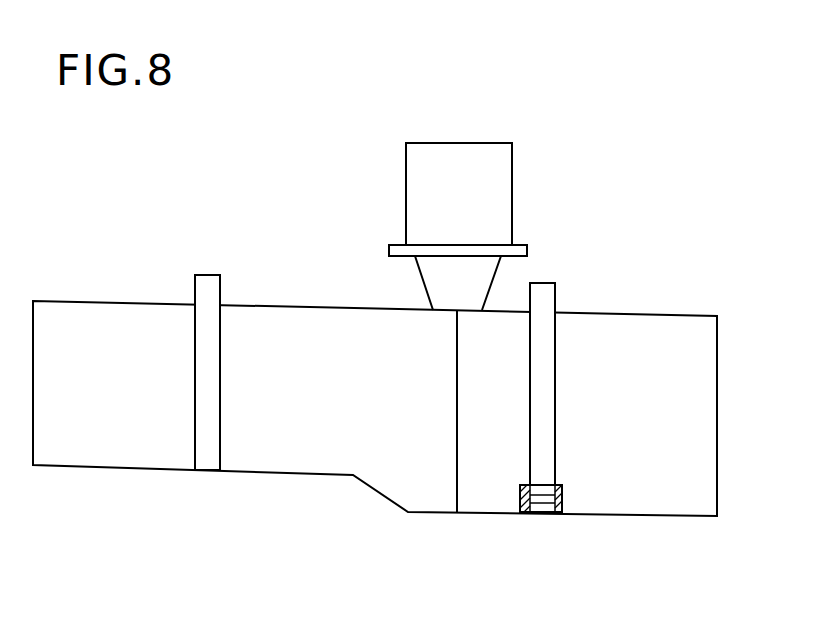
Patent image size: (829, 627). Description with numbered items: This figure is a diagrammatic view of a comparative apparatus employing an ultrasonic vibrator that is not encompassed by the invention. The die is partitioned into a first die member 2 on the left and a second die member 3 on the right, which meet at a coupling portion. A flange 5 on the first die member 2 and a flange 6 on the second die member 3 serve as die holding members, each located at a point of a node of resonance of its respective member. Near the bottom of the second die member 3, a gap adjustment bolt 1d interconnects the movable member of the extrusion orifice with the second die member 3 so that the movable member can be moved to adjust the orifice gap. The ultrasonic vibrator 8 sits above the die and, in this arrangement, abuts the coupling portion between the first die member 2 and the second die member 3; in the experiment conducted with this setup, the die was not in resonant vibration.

The first die member 2 is at (253, 462).
The second die member 3 is at (624, 505).
The flange 5 is at (212, 285).
The flange 6 is at (550, 293).
The gap adjustment bolt 1d is at (543, 512).
The ultrasonic vibrator 8 is at (495, 192).